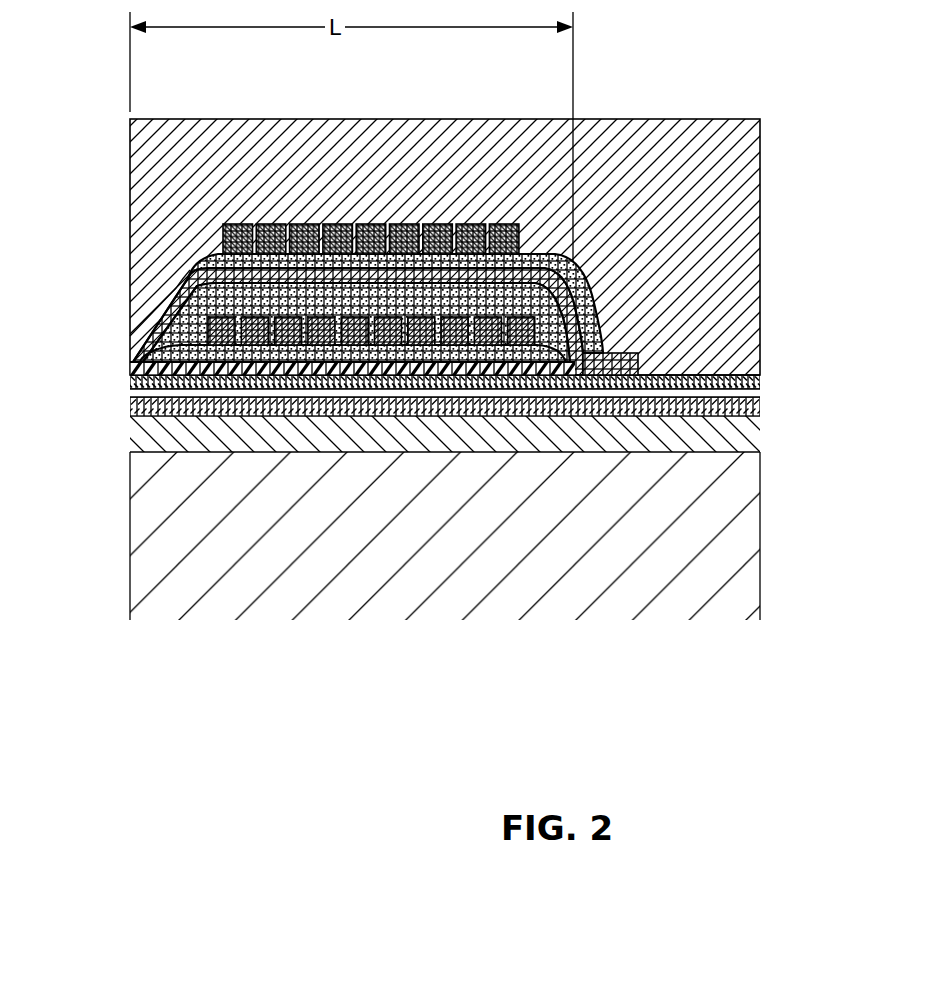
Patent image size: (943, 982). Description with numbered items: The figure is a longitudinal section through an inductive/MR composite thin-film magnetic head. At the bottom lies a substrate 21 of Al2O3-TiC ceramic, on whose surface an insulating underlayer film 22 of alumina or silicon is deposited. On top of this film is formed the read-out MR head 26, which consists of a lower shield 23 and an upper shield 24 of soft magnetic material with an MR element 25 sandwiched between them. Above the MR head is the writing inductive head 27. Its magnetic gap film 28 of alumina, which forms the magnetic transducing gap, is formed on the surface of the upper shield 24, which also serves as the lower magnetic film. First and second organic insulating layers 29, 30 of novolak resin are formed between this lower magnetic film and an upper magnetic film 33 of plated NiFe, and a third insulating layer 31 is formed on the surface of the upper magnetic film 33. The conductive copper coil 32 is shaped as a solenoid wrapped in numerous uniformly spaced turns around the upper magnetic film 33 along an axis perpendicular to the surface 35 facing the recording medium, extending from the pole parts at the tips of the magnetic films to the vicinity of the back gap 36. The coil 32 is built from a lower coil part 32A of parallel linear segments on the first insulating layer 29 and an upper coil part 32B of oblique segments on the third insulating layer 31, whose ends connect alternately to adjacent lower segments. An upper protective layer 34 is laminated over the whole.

The substrate 21 is at (137, 538).
The insulating underlayer film 22 is at (142, 453).
The lower shield 23 is at (131, 416).
The upper shield 24 is at (131, 382).
The MR element 25 is at (131, 407).
The MR head 26 is at (391, 416).
The inductive head 27 is at (146, 336).
The magnetic gap film 28 is at (131, 372).
The first insulating layer 29 is at (380, 345).
The second insulating layer 30 is at (410, 293).
The third insulating layer 31 is at (208, 262).
The conductive coil 32 is at (525, 270).
The lower coil part 32A is at (603, 335).
The upper coil part 32B is at (521, 240).
The upper magnetic film 33 is at (160, 310).
The upper protective layer 34 is at (131, 178).
The surface facing the recording medium 35 is at (131, 198).
The back gap 36 is at (620, 354).